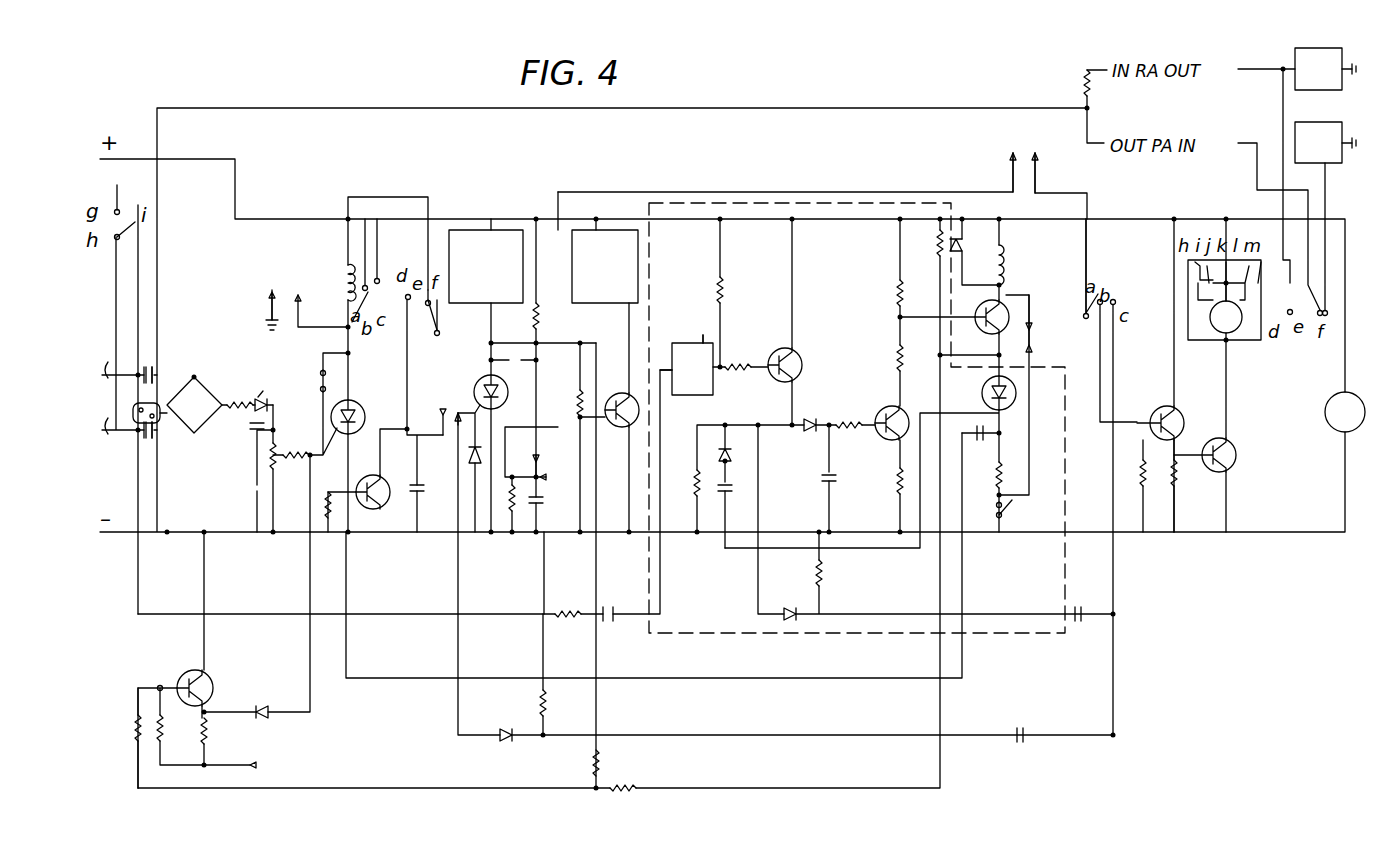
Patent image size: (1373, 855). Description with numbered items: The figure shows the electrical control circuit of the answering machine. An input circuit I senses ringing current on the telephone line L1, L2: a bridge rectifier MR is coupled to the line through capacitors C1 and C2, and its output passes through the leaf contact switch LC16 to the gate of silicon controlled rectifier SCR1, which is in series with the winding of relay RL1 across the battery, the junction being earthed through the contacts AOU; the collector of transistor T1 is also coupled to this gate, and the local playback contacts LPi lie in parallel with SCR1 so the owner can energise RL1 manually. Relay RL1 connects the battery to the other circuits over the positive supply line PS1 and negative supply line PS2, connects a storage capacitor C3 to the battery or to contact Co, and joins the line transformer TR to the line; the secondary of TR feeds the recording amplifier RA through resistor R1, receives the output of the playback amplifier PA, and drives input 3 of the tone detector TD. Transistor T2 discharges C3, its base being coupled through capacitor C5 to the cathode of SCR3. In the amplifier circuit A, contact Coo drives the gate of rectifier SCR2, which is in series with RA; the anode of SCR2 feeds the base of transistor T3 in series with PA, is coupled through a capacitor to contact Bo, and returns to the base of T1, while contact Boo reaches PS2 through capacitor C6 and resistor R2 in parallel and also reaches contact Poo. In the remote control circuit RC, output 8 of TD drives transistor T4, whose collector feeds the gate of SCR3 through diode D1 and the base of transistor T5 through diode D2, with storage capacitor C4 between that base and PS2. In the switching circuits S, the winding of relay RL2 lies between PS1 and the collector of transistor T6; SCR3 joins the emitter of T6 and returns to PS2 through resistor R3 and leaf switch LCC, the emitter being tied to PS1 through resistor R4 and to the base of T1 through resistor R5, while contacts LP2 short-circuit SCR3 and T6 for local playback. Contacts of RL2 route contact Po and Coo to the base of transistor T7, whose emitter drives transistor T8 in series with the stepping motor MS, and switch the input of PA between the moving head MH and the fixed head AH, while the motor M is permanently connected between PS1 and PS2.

The telephone line L1 is at (99, 356).
The telephone line L2 is at (95, 418).
The line transformer TR is at (140, 425).
The capacitor C1 is at (155, 366).
The capacitor C2 is at (186, 440).
The bridge rectifier MR is at (194, 405).
The leaf contact switch LC16 is at (260, 394).
The first pair of contacts of local playback switch LPi is at (302, 392).
The silicon controlled rectifier SCR1 is at (375, 393).
The transistor T2 is at (392, 472).
The storage capacitor C3 is at (430, 497).
The relay RL1 is at (330, 283).
The contacts Ao Aoo AOU is at (251, 303).
The input circuit I is at (296, 217).
The positive power supply line PS1 is at (447, 212).
The negative supply line PS2 is at (430, 550).
The second silicon controlled rectifier SCR2 is at (478, 368).
The recording amplifier RA is at (486, 266).
The playback amplifier PA is at (605, 266).
The amplifier circuit A is at (542, 212).
The contact Co is at (432, 408).
The contact Coo is at (458, 397).
The contact Bo is at (550, 459).
The contact Boo is at (556, 489).
The capacitor C6 is at (547, 511).
The resistor R2 is at (508, 495).
The transistor T3 is at (618, 397).
The tone detector circuit TD is at (692, 369).
The input of tone detector circuit 3 is at (662, 356).
The output of tone detector circuit 8 is at (704, 328).
The remote control circuit RC is at (823, 227).
The transistor T4 is at (805, 350).
The diode D1 is at (716, 452).
The further diode D2 is at (811, 418).
The transistor T5 is at (882, 410).
The storage capacitor C4 is at (843, 476).
The resistor R4 is at (925, 243).
The relay RL2 is at (1021, 265).
The transistor T6 is at (1003, 306).
The contacts of local playback switch LP2 is at (1049, 320).
The silicon controlled rectifier SCR3 is at (1016, 390).
The capacitor C5 is at (980, 439).
The resistor R3 is at (985, 481).
The leaf contact switch LCC is at (1004, 523).
The resistor R5 is at (618, 783).
The transistor T1 is at (209, 683).
The transistor T7 is at (1158, 410).
The transistor T8 is at (1238, 452).
The stepping motor MS is at (1224, 300).
The motor M is at (1345, 412).
The moving head MH is at (1318, 69).
The fixed head AH is at (1318, 142).
The resistor R1 is at (1083, 86).
The contact Po is at (994, 169).
The contact Poo is at (1056, 169).
The switching circuits S is at (1135, 236).